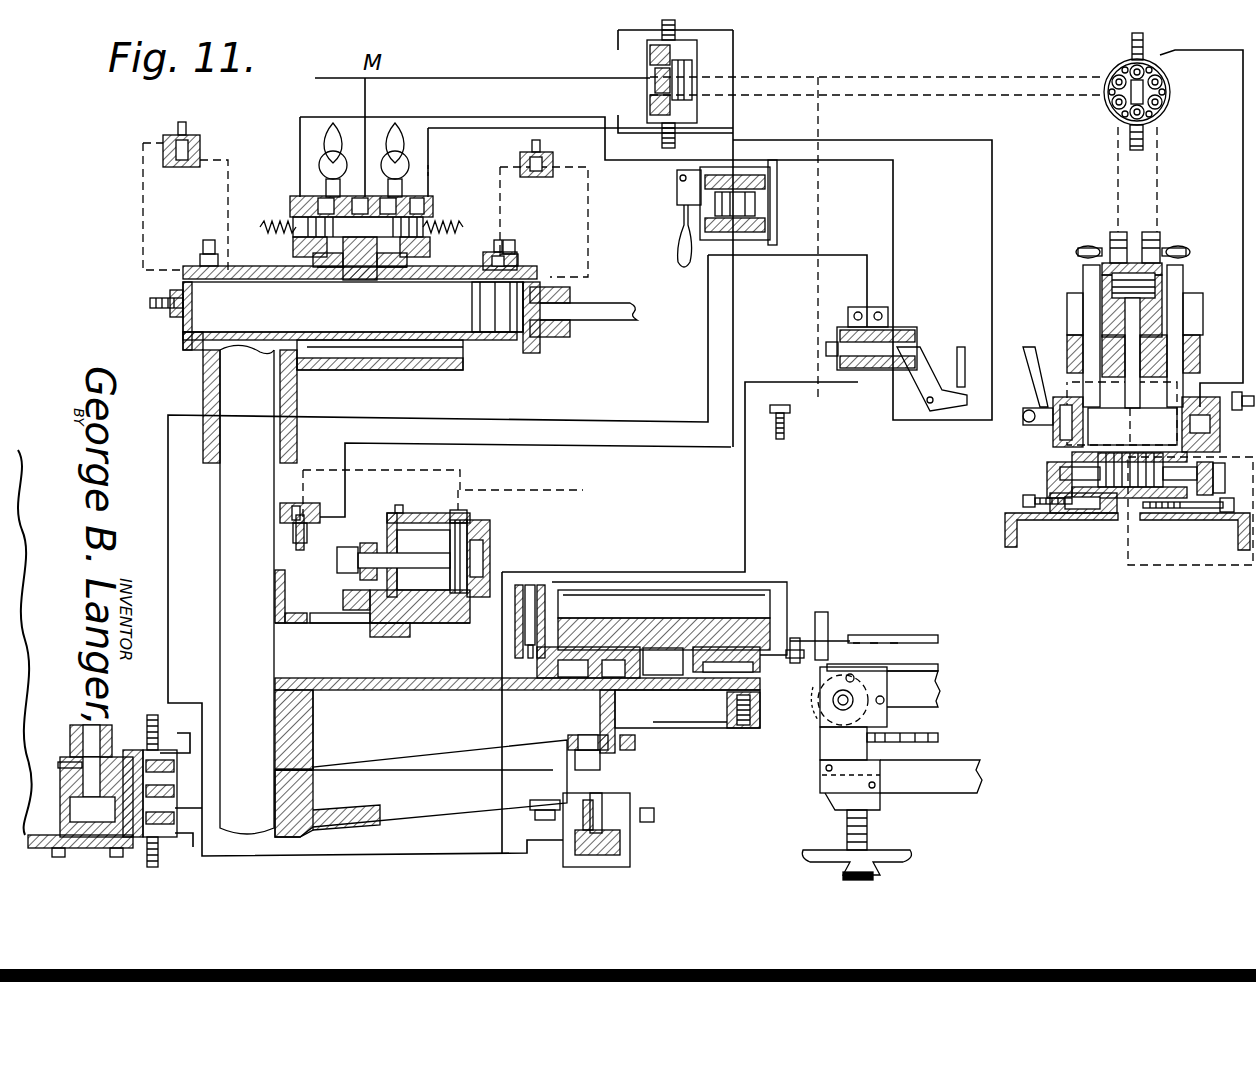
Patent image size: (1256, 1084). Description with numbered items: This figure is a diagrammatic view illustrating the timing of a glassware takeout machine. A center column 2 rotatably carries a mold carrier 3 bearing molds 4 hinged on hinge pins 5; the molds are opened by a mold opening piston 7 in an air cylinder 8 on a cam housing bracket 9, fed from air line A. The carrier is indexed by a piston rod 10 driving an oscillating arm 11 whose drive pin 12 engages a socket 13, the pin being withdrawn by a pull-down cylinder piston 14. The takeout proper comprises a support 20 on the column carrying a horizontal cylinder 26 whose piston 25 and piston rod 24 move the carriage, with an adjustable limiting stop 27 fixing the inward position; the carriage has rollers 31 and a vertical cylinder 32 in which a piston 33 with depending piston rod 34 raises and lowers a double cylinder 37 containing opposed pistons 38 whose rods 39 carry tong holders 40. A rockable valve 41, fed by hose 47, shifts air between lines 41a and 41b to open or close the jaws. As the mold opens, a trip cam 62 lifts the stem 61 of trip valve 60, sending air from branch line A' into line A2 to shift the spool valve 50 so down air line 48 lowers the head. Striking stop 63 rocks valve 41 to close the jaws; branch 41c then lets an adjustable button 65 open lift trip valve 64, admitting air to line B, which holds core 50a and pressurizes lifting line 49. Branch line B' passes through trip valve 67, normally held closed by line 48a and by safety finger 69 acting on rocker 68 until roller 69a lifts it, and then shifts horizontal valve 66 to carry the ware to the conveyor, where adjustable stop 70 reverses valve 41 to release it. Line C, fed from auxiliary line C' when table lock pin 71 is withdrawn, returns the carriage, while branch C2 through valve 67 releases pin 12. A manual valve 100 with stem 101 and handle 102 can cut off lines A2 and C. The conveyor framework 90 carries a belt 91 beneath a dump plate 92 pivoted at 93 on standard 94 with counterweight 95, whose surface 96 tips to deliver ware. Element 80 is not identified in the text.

The center column 2 is at (258, 660).
The mold carrier 3 is at (447, 690).
The mold 4 is at (553, 585).
The hinge pin 5 is at (528, 608).
The mold opening piston 7 is at (478, 545).
The air cylinder 8 is at (403, 571).
The cam housing bracket 9 is at (300, 615).
The piston rod 10 is at (540, 805).
The oscillating arm 11 is at (400, 808).
The drive pin 12 is at (600, 752).
The socket 13 is at (578, 737).
The pull-down cylinder piston 14 is at (630, 855).
The support 20 is at (297, 397).
The piston rod 24 is at (608, 322).
The piston 25 is at (503, 325).
The cylinder 26 is at (361, 317).
The adjustable limiting stop 27 is at (150, 310).
The rollers 31 is at (1175, 320).
The cylinder 32 is at (1150, 293).
The piston 33 is at (1162, 268).
The piston rod 34 is at (1130, 325).
The double cylinder 37 is at (1115, 492).
The opposed pistons 38 is at (1100, 498).
The rods 39 is at (1063, 512).
The tong holder 40 is at (1212, 480).
The jaw operating rockable valve 41 is at (1218, 418).
The air line 41a is at (1210, 450).
The air line 41b is at (1158, 436).
The branch line 41c is at (1132, 426).
The hose 47 is at (1238, 130).
The down air line 48 is at (940, 70).
The air line 48a is at (820, 238).
The lifting line 49 is at (955, 95).
The lifting cylinder operating valve 50 is at (690, 62).
The core 50a is at (655, 80).
The grasping unit lowering trip valve 60 is at (308, 530).
The valve stem 61 is at (300, 550).
The trip cam 62 is at (360, 530).
The stop 63 is at (790, 425).
The lift trip valve 64 is at (1035, 428).
The adjustable button 65 is at (1053, 452).
The horizontal movement controlling valve 66 is at (292, 210).
The trip valve 67 is at (905, 332).
The rocker 68 is at (935, 410).
The safety finger 69 is at (967, 370).
The roller 69a is at (1040, 420).
The adjustable stop 70 is at (1236, 392).
The table lock pin 71 is at (98, 724).
The base 80 is at (1005, 530).
The supporting framework 90 is at (955, 782).
The movable endless belt 91 is at (935, 735).
The dump plate 92 is at (835, 635).
The pivot 93 is at (818, 638).
The standard 94 is at (820, 700).
The counterweight 95 is at (793, 663).
The ware-receiving surface 96 is at (918, 634).
The manually actuated control valve 100 is at (765, 208).
The valve stem 101 is at (778, 175).
The handle 102 is at (676, 258).
The air line A is at (516, 474).
The branch air line A' is at (427, 485).
The air line A2 is at (588, 447).
The air line B is at (967, 380).
The branch line B' is at (923, 272).
The air line C is at (441, 158).
The auxiliary line C' is at (660, 403).
The branch line C2 is at (748, 555).